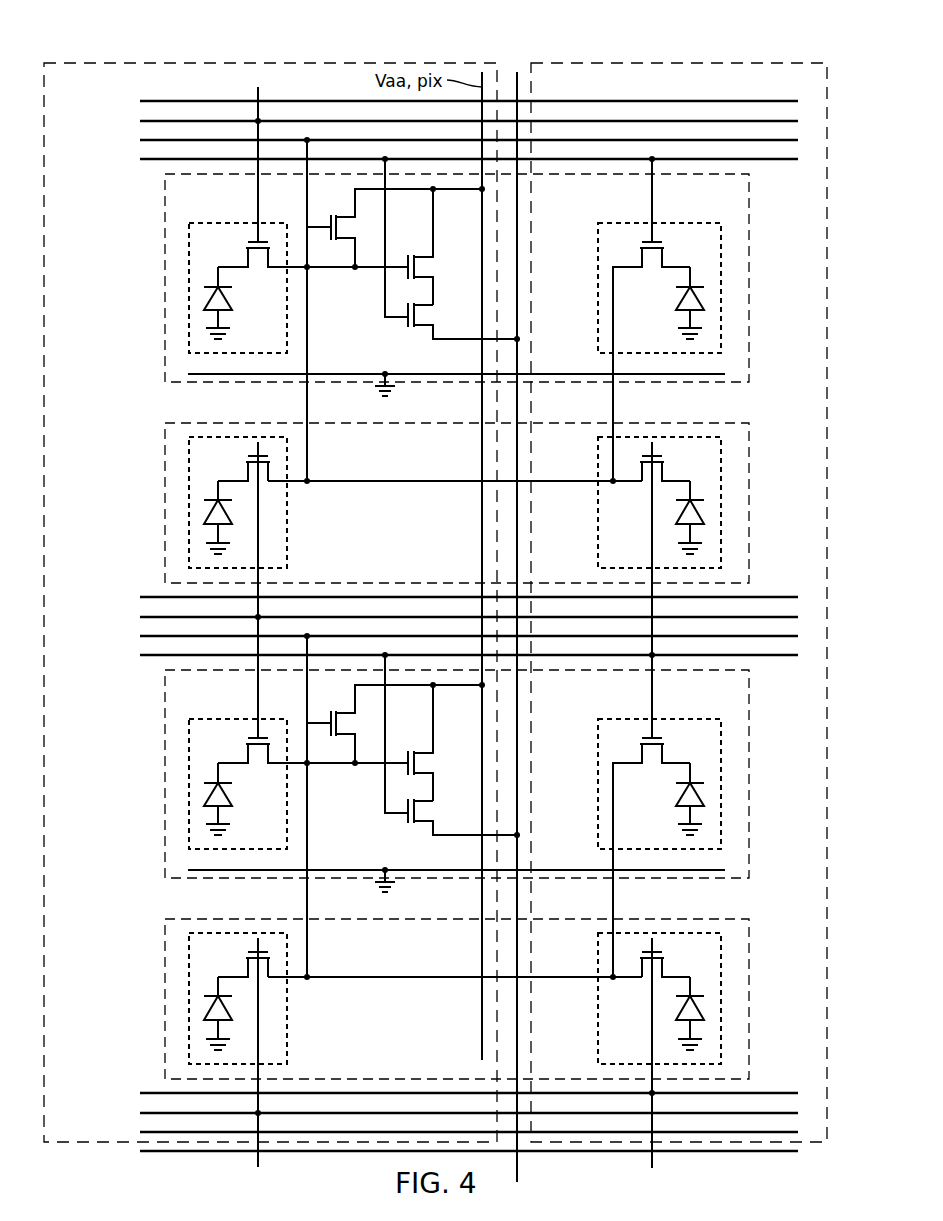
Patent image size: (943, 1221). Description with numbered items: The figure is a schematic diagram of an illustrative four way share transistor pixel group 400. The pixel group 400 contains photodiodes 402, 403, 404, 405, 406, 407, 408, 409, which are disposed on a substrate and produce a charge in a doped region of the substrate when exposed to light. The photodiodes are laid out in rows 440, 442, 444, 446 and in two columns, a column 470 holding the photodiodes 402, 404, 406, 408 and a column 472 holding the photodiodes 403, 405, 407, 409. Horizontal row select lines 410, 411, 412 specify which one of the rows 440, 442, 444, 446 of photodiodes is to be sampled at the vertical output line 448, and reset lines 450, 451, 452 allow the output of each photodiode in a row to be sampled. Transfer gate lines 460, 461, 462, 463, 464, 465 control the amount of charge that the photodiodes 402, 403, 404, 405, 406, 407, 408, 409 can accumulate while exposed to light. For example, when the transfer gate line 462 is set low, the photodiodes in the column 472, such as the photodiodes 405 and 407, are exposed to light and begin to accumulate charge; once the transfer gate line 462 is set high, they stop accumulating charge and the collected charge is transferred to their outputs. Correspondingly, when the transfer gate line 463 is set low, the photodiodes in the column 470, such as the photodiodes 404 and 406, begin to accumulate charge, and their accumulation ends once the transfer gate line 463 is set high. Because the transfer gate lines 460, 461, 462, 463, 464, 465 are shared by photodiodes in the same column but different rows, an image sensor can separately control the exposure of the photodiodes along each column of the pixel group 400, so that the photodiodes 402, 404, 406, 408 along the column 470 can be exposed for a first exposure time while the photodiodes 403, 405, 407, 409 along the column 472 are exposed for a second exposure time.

The four way share transistor pixel group 400 is at (435, 608).
The photodiode 402 is at (230, 246).
The photodiode 403 is at (707, 246).
The photodiode 404 is at (230, 461).
The photodiode 405 is at (707, 461).
The photodiode 406 is at (248, 733).
The photodiode 407 is at (659, 816).
The photodiode 408 is at (238, 1050).
The photodiode 409 is at (659, 1050).
The row select line 410 is at (140, 159).
The row select line 411 is at (140, 655).
The row select line 412 is at (140, 1151).
The row 440 is at (165, 268).
The row 442 is at (165, 492).
The row 444 is at (165, 762).
The row 446 is at (165, 988).
The output line 448 is at (517, 88).
The reset line 450 is at (140, 140).
The reset line 451 is at (140, 636).
The reset line 452 is at (140, 1132).
The transfer gate line 460 is at (140, 101).
The transfer gate line 461 is at (140, 121).
The transfer gate line 462 is at (140, 597).
The transfer gate line 463 is at (140, 617).
The transfer gate line 464 is at (140, 1093).
The transfer gate line 465 is at (140, 1113).
The column 470 is at (337, 1143).
The column 472 is at (665, 1143).